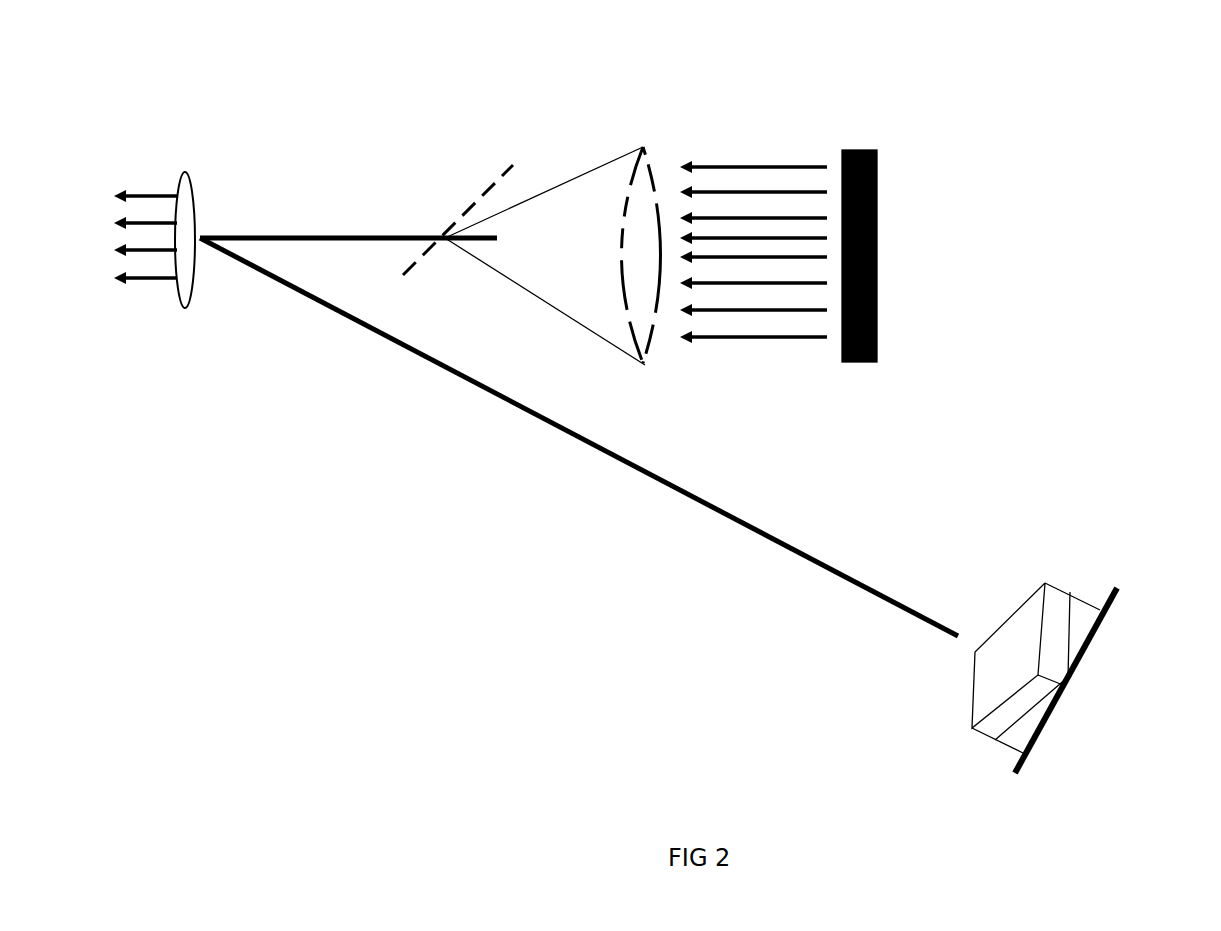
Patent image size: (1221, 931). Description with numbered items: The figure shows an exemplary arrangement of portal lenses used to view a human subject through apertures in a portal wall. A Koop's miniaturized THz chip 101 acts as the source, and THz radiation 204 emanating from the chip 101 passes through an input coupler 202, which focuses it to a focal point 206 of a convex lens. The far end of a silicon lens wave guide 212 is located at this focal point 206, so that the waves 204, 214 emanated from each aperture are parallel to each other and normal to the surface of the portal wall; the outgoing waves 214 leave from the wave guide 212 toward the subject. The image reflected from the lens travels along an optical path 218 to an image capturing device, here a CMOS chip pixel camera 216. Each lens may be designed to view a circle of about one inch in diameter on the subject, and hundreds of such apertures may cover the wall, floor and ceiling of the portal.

The Koop's miniaturized THz chip 101 is at (887, 297).
The input coupler 202 is at (645, 140).
The THz radiation 204 is at (740, 158).
The focal point of the convex lens 206 is at (473, 205).
The silicon lens wave guide 212 is at (193, 202).
The waves emanated from the aperture 214 is at (124, 172).
The CMOS chip pixel camera 216 is at (1077, 587).
The optical path 218 is at (498, 408).